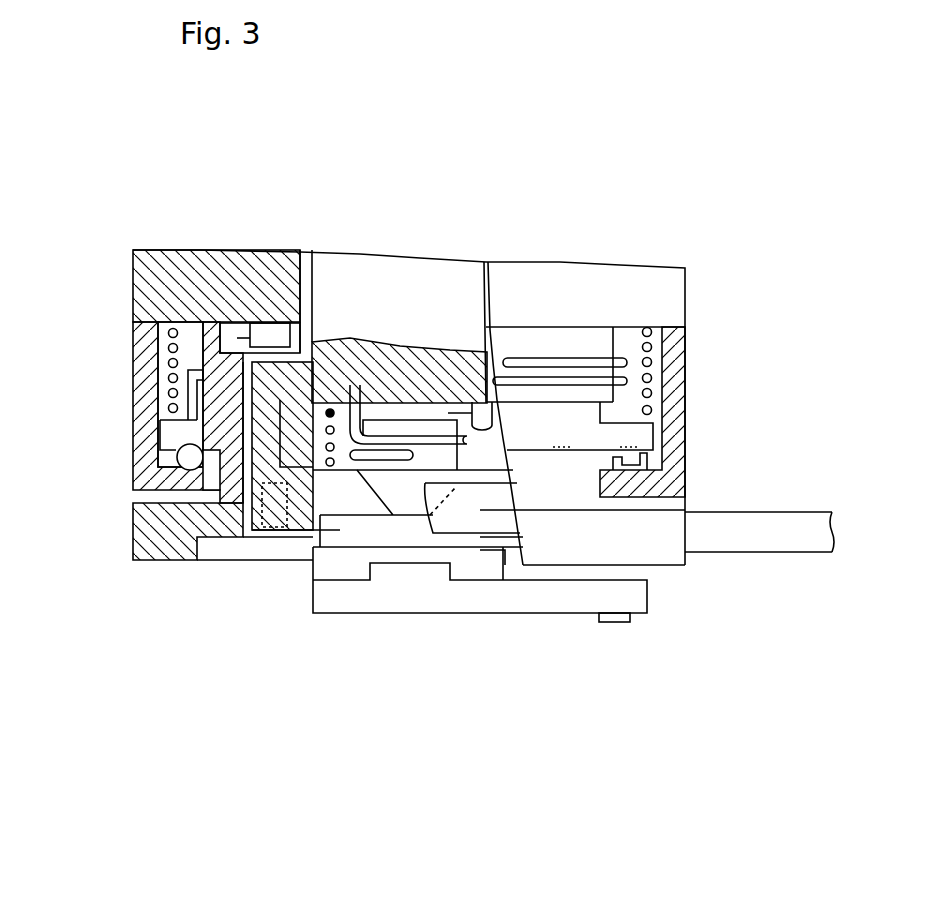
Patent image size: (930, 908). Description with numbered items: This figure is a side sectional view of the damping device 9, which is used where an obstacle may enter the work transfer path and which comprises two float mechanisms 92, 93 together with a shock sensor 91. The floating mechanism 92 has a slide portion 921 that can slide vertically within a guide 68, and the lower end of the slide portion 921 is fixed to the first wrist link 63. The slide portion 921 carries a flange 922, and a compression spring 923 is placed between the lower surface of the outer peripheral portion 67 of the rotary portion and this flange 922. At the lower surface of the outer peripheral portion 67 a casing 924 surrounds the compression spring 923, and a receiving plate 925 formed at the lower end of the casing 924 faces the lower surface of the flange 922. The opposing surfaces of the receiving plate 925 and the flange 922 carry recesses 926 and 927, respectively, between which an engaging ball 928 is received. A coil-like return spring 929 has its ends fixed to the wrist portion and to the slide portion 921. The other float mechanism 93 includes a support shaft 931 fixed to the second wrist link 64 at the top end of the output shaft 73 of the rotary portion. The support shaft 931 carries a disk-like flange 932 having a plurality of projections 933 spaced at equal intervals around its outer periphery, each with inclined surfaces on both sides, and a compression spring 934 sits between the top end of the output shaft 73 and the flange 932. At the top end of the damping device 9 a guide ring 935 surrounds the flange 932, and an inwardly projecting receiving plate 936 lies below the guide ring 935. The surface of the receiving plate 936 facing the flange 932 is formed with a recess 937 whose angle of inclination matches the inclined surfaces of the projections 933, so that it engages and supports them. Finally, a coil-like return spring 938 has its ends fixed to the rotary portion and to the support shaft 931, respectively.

The damping device 9 is at (180, 183).
The shock sensor 91 is at (153, 247).
The outer peripheral portion 67 is at (267, 333).
The guide 68 is at (160, 357).
The output shaft 73 is at (400, 280).
The floating mechanism 92 is at (197, 690).
The slide portion 921 is at (237, 477).
The flange 922 is at (172, 428).
The compression spring 923 is at (150, 330).
The casing 924 is at (133, 385).
The receiving plate 925 is at (135, 478).
The recess 926 is at (133, 457).
The recess 927 is at (215, 462).
The engaging ball 928 is at (202, 452).
The return spring 929 is at (630, 357).
The float mechanism 93 is at (517, 723).
The support shaft 931 is at (460, 537).
The flange 932 is at (370, 507).
The projections 933 is at (330, 470).
The compression spring 934 is at (330, 410).
The guide ring 935 is at (259, 400).
The receiving plate 936 is at (297, 527).
The recess 937 is at (330, 253).
The return spring 938 is at (385, 440).
The first wrist link 63 is at (742, 522).
The second wrist link 64 is at (637, 617).